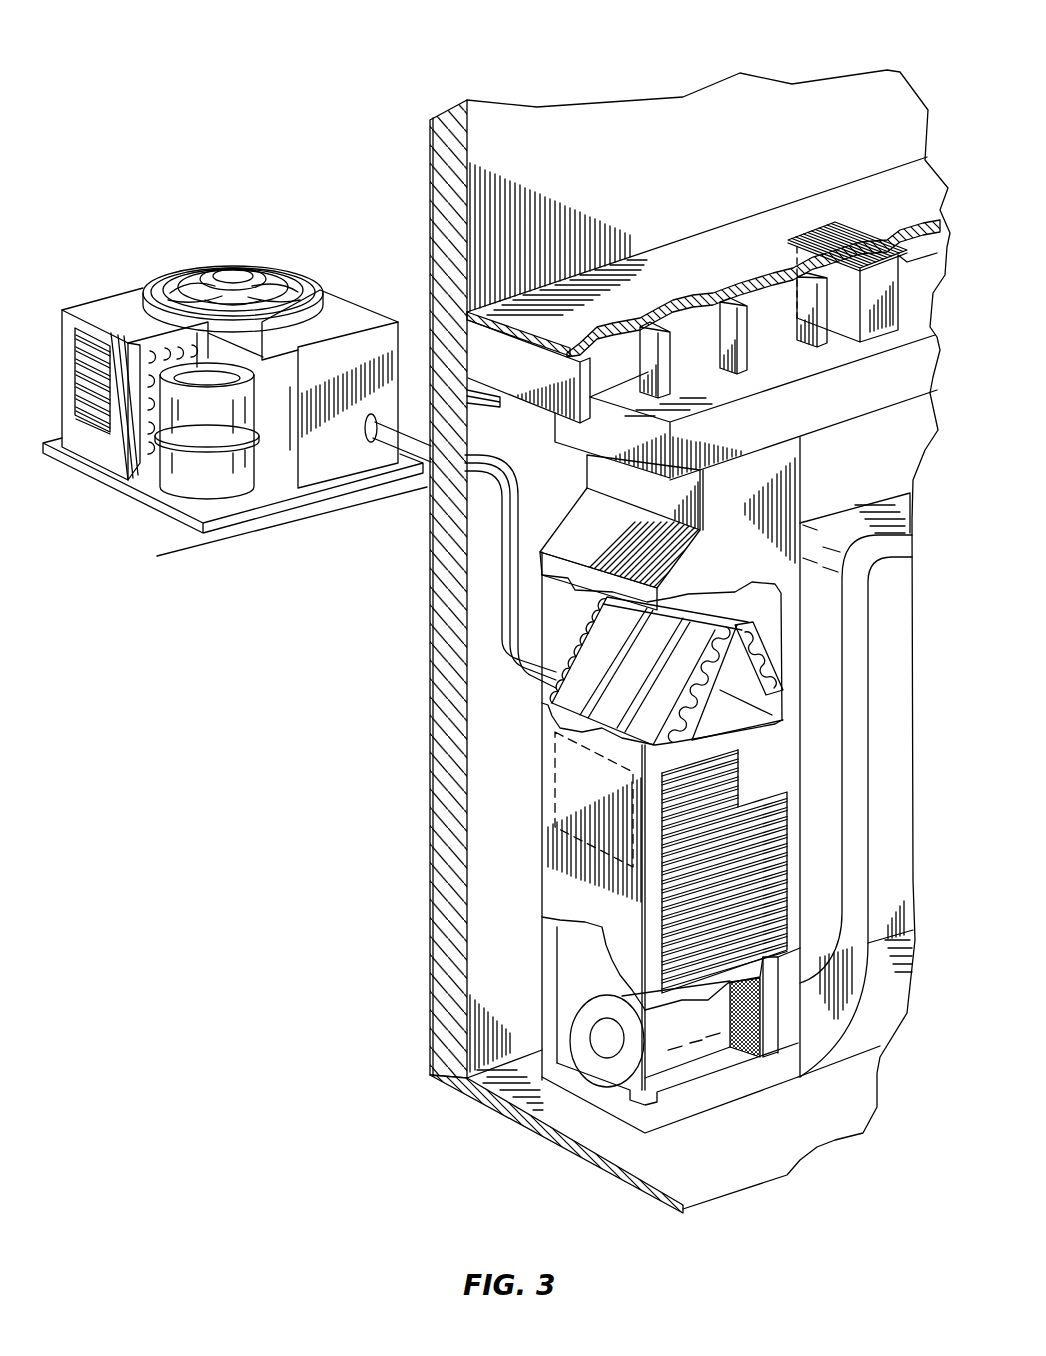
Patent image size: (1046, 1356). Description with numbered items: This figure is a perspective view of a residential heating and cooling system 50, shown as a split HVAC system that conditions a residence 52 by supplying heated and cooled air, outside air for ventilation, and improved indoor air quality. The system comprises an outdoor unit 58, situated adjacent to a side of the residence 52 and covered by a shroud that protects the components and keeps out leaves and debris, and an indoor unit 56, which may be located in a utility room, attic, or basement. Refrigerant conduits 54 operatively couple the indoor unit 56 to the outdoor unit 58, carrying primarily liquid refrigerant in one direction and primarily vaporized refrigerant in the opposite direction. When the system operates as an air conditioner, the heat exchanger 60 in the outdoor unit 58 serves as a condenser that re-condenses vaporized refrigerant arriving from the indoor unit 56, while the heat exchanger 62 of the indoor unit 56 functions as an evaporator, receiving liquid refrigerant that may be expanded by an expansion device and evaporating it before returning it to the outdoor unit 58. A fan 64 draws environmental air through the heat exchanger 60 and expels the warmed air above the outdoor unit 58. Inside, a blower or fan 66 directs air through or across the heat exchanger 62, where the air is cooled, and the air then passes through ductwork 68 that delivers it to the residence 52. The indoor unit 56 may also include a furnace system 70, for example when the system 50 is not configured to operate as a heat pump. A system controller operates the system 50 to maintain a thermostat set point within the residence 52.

The residential heating and cooling system 50 is at (349, 45).
The residence 52 is at (588, 108).
The refrigerant conduits 54 is at (505, 527).
The indoor unit 56 is at (523, 836).
The outdoor unit 58 is at (172, 255).
The heat exchanger 60 is at (155, 357).
The heat exchanger 62 is at (615, 700).
The fan 64 is at (260, 273).
The blower or fan 66 is at (597, 1062).
The ductwork 68 is at (880, 303).
The furnace system 70 is at (553, 766).